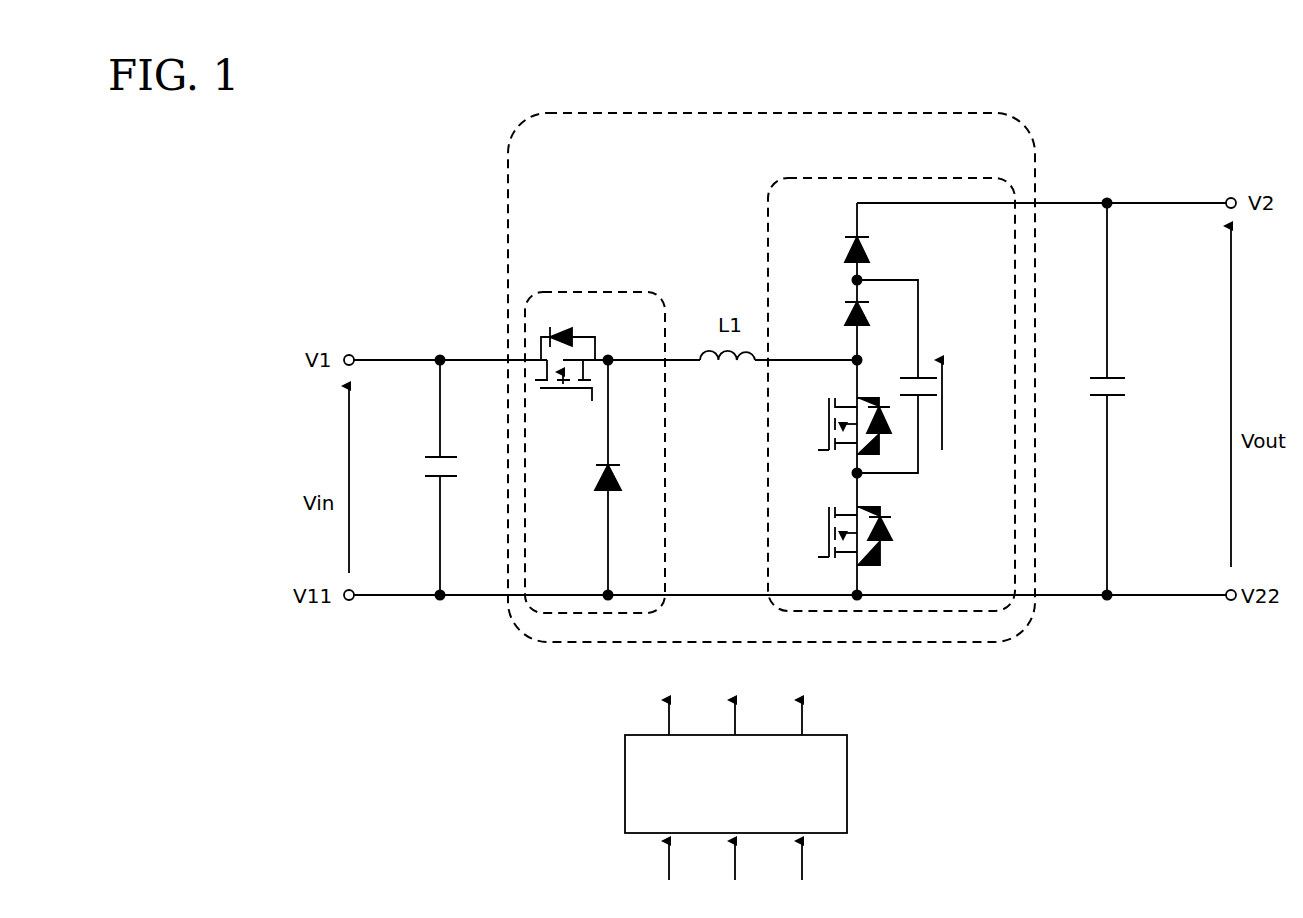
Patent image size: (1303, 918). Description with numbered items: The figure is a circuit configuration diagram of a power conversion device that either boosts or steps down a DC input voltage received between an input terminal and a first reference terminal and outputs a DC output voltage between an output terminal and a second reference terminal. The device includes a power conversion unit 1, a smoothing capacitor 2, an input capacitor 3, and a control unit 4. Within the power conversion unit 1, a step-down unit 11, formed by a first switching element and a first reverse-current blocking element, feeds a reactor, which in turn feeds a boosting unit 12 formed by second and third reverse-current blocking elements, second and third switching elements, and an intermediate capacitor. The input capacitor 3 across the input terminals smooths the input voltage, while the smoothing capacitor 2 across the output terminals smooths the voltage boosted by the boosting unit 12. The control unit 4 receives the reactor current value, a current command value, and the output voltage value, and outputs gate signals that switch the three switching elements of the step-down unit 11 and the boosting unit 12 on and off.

The power conversion unit 1 is at (1020, 128).
The step-down unit 11 is at (612, 290).
The boosting unit 12 is at (925, 176).
The smoothing capacitor 2 is at (1093, 400).
The input capacitor 3 is at (447, 456).
The control unit 4 is at (848, 786).